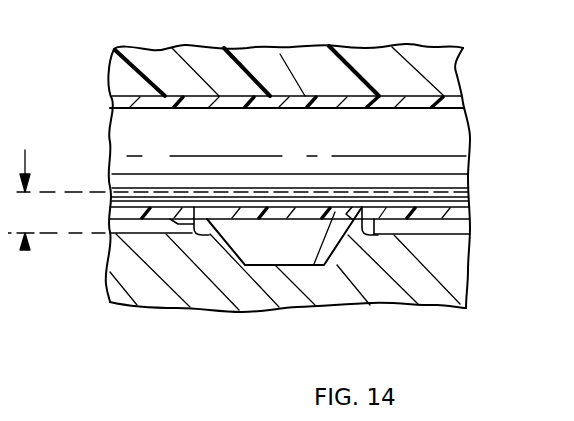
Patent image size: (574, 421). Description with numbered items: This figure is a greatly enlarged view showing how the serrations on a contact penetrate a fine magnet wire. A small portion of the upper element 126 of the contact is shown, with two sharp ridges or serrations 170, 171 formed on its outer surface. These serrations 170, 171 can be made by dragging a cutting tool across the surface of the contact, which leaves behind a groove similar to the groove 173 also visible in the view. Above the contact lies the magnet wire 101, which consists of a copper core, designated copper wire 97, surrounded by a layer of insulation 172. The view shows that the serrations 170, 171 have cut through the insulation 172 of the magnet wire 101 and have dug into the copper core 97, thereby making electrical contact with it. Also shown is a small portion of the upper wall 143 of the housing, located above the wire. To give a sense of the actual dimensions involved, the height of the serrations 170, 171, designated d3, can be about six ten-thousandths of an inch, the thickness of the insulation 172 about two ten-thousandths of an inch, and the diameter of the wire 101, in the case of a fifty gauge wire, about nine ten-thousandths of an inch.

The upper wall 143 is at (458, 44).
The insulation 172 is at (446, 102).
The magnet wire 101 is at (475, 153).
The copper wire 97 is at (446, 166).
The serration 170 is at (201, 197).
The serration 171 is at (359, 195).
The groove 173 is at (302, 263).
The upper element 126 is at (152, 288).
The height of the serrations d3 is at (56, 200).